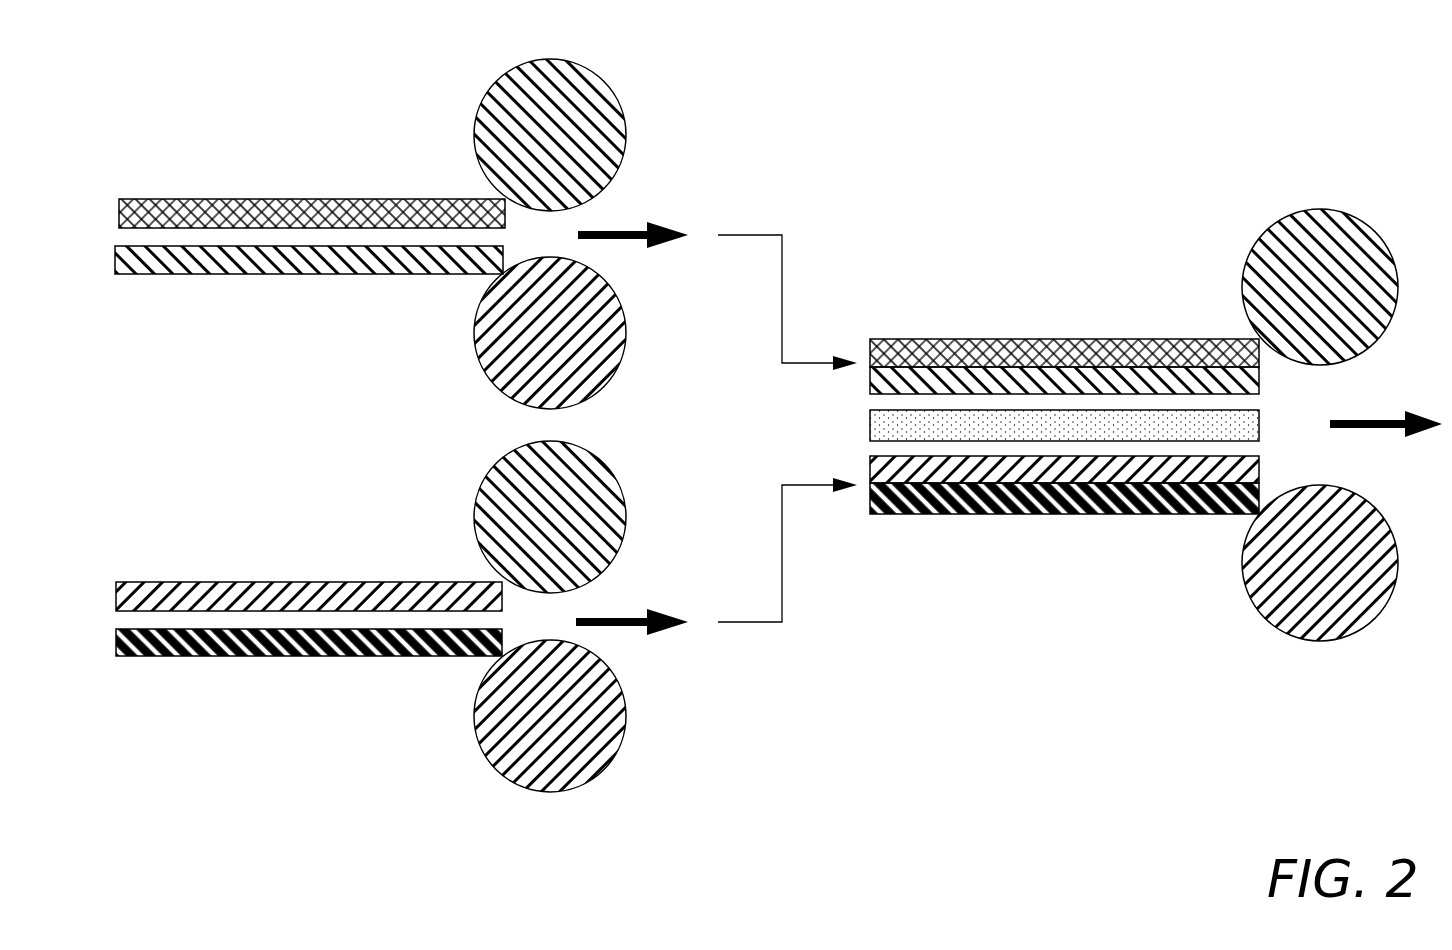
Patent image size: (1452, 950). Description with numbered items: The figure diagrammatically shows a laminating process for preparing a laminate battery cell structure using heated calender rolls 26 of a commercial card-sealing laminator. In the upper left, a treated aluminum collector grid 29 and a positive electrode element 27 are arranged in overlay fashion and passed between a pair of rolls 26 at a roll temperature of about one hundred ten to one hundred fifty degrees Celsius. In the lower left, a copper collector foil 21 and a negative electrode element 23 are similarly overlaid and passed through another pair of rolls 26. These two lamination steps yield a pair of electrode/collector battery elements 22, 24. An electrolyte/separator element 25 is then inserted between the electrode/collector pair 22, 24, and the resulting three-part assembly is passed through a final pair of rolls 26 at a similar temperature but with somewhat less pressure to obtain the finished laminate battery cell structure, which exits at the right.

The copper collector foil 21 is at (268, 656).
The electrode/collector battery element 22 is at (1085, 550).
The negative electrode element 23 is at (167, 587).
The electrode/collector battery element 24 is at (1048, 304).
The electrolyte/separator element 25 is at (885, 428).
The rolls 26 is at (580, 132).
The positive electrode element 27 is at (207, 259).
The treated aluminum collector grid 29 is at (249, 199).